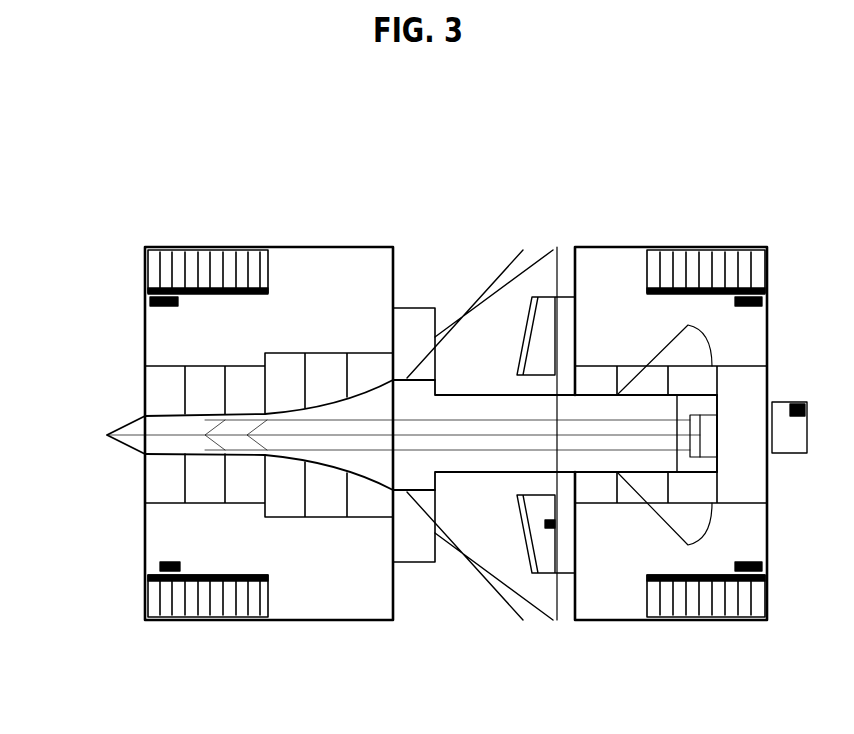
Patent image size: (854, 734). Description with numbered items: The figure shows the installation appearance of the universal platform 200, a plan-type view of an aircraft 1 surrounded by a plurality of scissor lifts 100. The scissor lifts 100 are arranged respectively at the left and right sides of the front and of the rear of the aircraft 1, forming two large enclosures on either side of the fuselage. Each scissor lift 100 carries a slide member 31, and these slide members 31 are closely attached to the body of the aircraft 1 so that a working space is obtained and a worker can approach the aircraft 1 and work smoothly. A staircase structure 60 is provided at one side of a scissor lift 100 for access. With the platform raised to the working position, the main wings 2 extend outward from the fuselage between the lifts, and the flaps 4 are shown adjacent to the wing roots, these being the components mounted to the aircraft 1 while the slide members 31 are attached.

The universal platform 200 is at (62, 138).
The scissor lift 100 is at (273, 252).
The staircase structure 60 is at (188, 263).
The slide member 31 is at (167, 386).
The aircraft 1 is at (457, 430).
The main wing 2 is at (505, 298).
The flap 4 is at (548, 323).